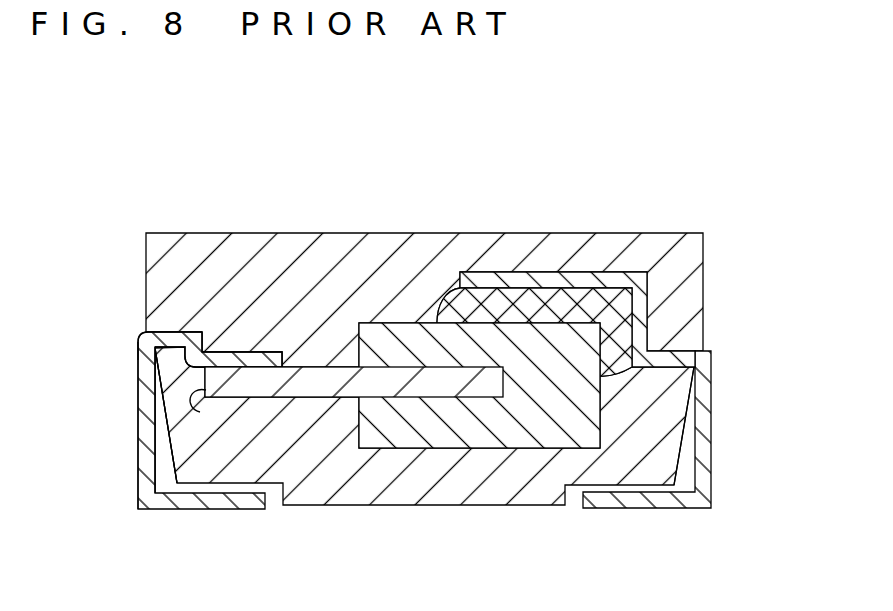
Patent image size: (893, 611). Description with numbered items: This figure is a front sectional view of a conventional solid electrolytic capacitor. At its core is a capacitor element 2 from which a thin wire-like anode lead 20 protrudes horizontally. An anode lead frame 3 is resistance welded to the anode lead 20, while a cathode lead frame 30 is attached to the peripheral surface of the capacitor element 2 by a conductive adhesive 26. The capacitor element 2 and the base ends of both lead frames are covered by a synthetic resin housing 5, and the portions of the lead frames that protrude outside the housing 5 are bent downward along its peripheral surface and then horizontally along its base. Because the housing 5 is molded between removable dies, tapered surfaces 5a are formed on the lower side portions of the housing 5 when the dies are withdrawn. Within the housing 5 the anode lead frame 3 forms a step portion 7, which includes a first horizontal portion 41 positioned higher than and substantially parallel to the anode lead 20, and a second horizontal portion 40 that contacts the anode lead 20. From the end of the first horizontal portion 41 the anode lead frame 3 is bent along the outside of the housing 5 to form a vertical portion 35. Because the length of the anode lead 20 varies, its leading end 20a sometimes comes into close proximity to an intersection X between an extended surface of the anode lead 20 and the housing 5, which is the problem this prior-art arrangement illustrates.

The capacitor element 2 is at (405, 332).
The anode lead frame 3 is at (227, 502).
The synthetic resin housing 5 is at (688, 252).
The tapered surfaces 5a is at (172, 461).
The step portion 7 is at (210, 242).
The anode lead 20 is at (323, 380).
The leading end 20a is at (200, 412).
The conductive adhesive 26 is at (537, 297).
The cathode lead frame 30 is at (703, 418).
The vertical portion 35 is at (145, 419).
The second horizontal portion 40 is at (232, 357).
The first horizontal portion 41 is at (170, 338).
The intersection X is at (155, 372).